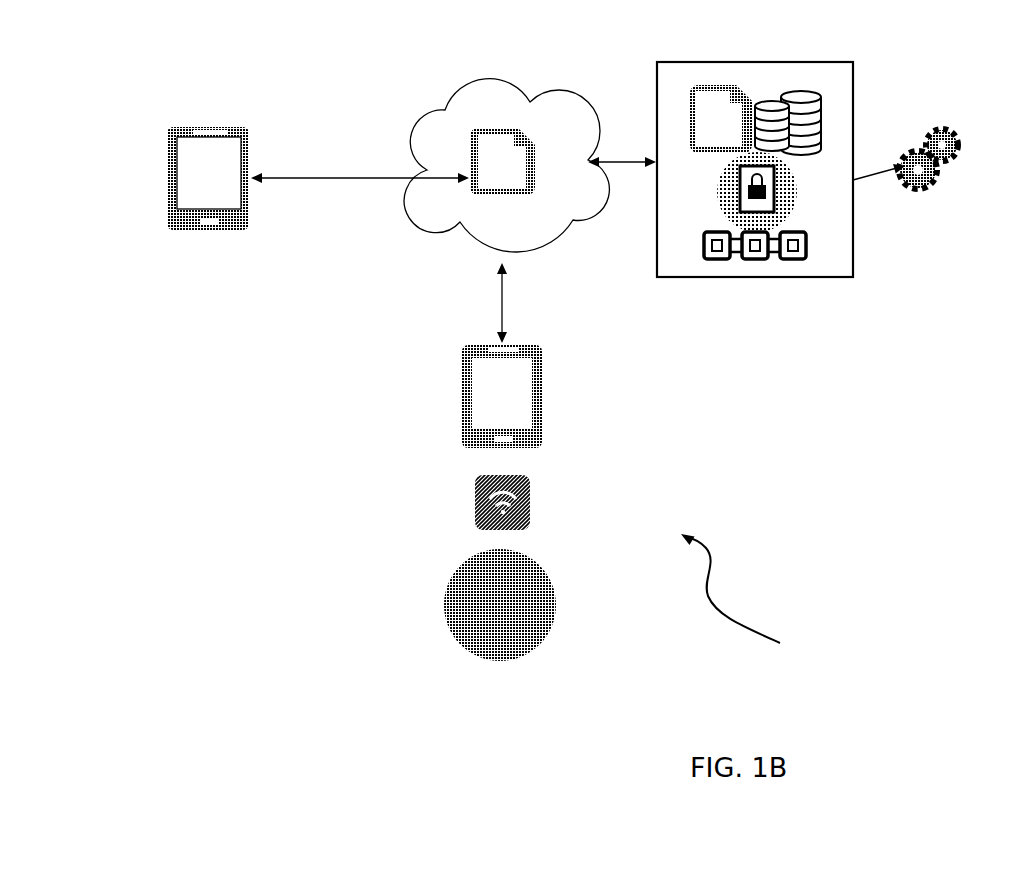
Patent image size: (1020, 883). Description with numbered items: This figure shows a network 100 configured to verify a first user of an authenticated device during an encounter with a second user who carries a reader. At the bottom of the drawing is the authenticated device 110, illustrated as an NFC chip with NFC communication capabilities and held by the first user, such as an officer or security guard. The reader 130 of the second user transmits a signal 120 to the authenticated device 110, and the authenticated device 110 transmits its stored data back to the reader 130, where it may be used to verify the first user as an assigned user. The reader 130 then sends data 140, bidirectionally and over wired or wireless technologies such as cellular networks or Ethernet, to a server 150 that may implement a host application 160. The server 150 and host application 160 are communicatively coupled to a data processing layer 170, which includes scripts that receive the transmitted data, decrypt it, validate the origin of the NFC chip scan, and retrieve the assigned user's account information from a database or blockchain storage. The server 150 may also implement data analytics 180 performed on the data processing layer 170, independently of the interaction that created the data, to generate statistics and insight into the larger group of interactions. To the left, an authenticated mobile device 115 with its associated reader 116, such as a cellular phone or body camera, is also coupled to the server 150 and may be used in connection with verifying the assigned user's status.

The network 100 is at (747, 597).
The authenticated device 110 is at (427, 598).
The authenticated mobile device 115 is at (155, 175).
The reader 116 is at (203, 117).
The signal 120 is at (427, 490).
The reader 130 is at (427, 393).
The data 140 is at (466, 295).
The server 150 is at (398, 152).
The host application 160 is at (470, 128).
The data processing layer 170 is at (657, 62).
The data analytics 180 is at (912, 123).